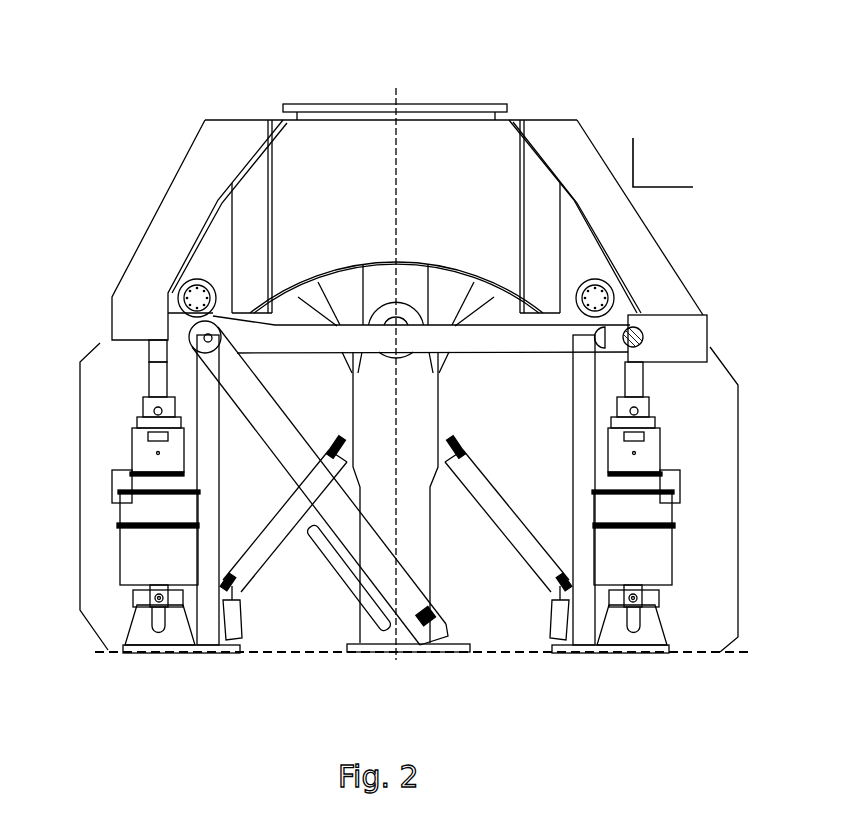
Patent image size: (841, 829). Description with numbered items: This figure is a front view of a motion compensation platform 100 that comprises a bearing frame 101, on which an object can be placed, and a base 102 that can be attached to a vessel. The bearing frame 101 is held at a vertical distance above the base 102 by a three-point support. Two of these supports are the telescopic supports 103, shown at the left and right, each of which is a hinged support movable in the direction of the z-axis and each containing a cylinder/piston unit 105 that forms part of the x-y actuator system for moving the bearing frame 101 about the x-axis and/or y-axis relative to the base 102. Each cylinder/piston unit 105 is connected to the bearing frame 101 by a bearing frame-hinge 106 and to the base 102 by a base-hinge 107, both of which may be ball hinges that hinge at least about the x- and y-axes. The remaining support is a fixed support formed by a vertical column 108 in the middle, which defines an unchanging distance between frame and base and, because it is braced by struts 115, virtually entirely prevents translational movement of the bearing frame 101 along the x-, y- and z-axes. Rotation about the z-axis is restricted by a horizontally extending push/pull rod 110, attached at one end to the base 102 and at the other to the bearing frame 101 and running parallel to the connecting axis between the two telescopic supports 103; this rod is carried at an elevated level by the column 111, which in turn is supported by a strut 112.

The motion compensation platform 100 is at (172, 110).
The bearing frame 101 is at (555, 128).
The base 102 is at (165, 655).
The telescopic support 103 is at (80, 495).
The cylinder/piston unit 105 is at (709, 473).
The bearing frame-hinge 106 is at (709, 305).
The base-hinge 107 is at (711, 600).
The vertical column 108 is at (440, 541).
The push/pull rod 110 is at (502, 343).
The column 111 is at (210, 518).
The strut 112 is at (275, 425).
The strut 115 is at (282, 543).